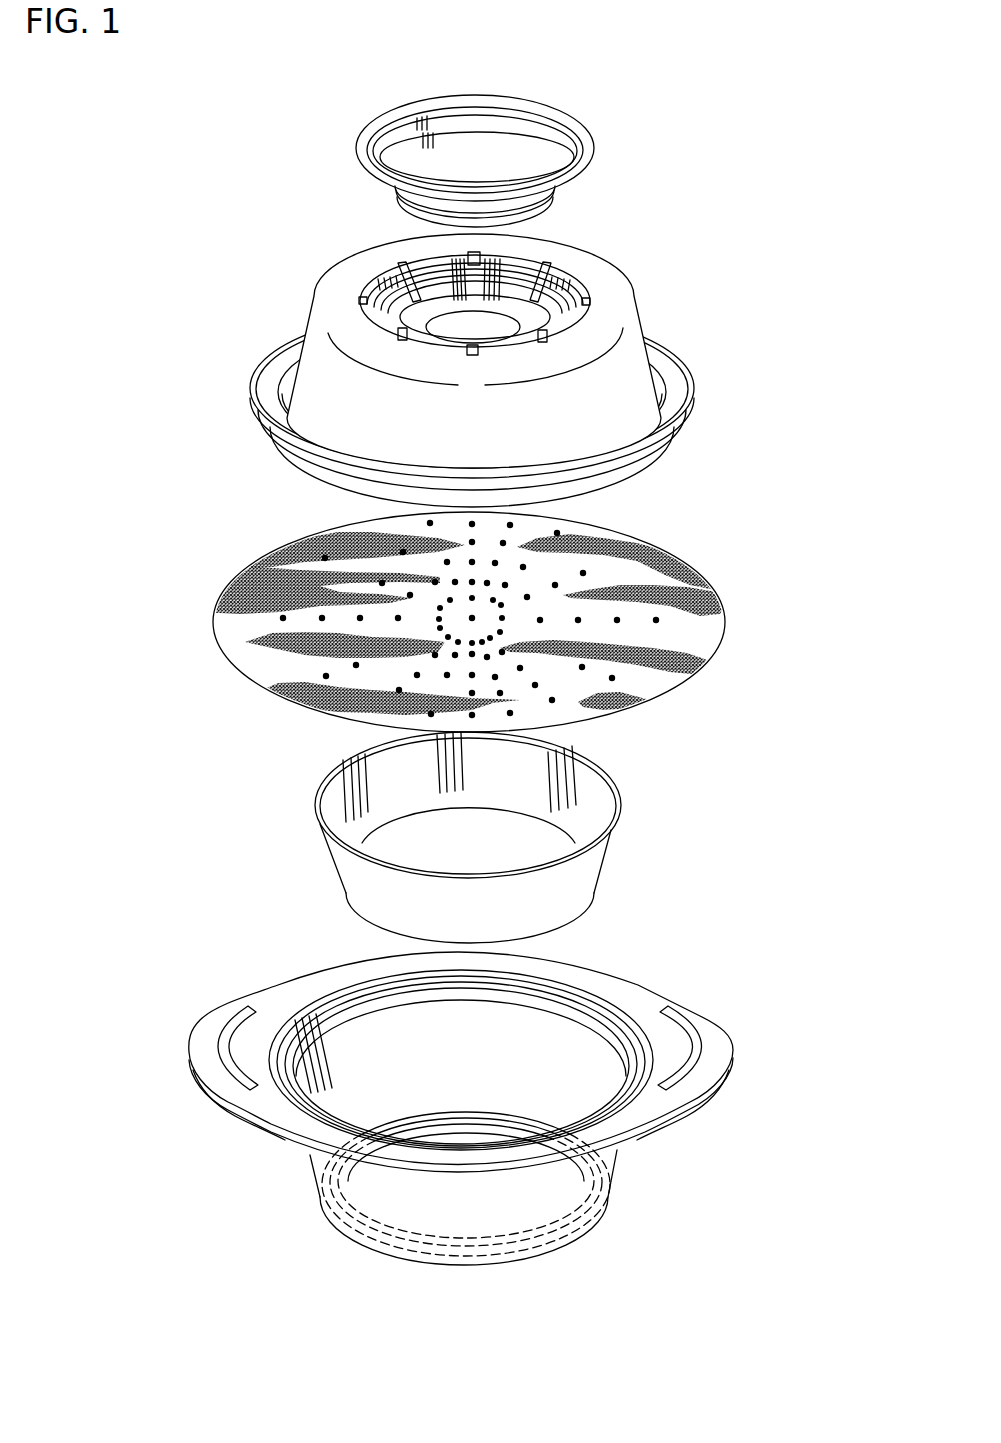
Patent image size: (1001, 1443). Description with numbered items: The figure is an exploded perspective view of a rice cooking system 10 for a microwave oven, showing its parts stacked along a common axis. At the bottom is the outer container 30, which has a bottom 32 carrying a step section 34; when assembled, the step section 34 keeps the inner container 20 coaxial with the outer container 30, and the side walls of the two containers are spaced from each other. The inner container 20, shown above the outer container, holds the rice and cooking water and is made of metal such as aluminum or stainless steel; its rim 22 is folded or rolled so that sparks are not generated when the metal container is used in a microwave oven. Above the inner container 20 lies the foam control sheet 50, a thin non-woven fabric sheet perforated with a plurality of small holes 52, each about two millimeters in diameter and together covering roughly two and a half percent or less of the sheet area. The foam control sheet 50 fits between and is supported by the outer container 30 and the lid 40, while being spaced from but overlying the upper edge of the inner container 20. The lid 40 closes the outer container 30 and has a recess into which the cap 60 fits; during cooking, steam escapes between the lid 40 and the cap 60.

The rice cooking system 10 is at (465, 704).
The inner container 20 is at (454, 837).
The rim 22 is at (620, 819).
The outer container 30 is at (461, 1088).
The bottom 32 is at (494, 1134).
The step section 34 is at (414, 1121).
The lid 40 is at (309, 284).
The foam control sheet 50 is at (465, 612).
The small holes 52 is at (661, 618).
The cap 60 is at (354, 139).